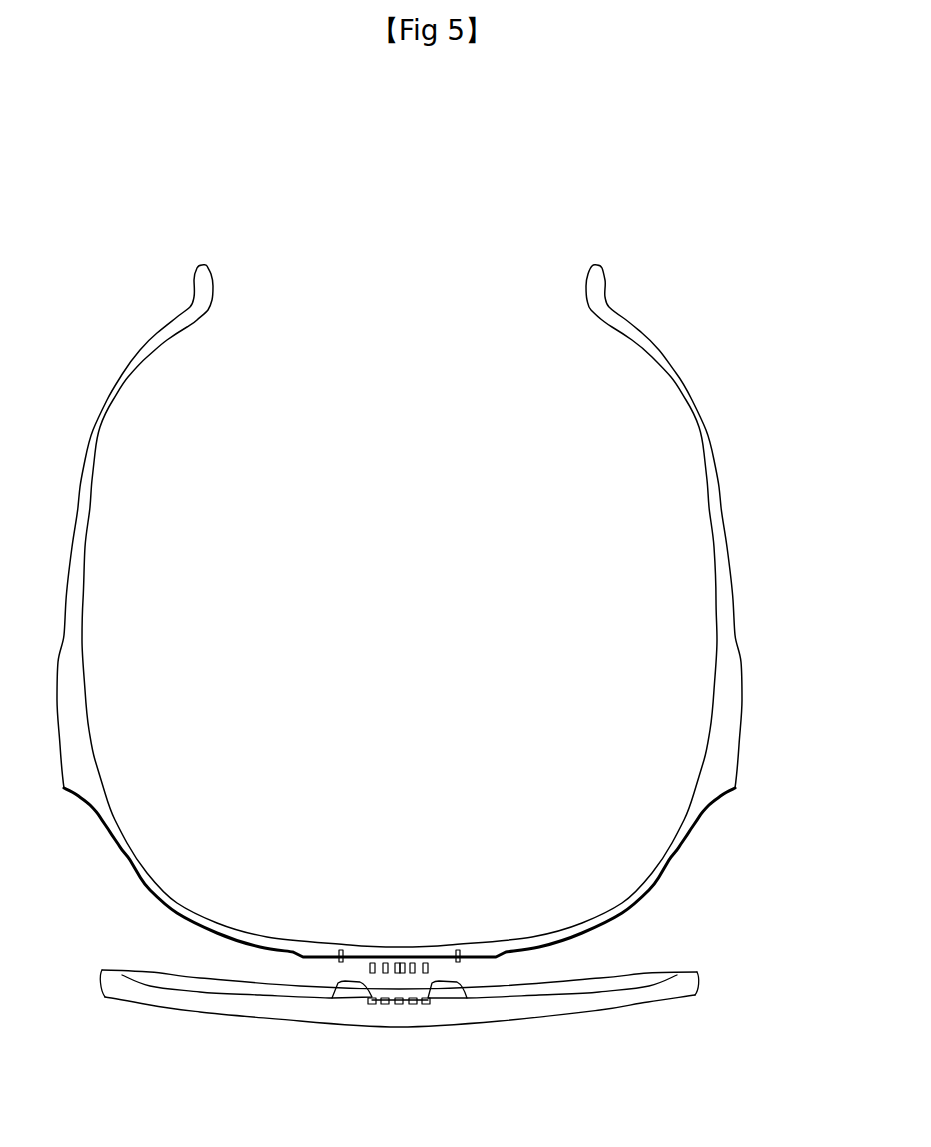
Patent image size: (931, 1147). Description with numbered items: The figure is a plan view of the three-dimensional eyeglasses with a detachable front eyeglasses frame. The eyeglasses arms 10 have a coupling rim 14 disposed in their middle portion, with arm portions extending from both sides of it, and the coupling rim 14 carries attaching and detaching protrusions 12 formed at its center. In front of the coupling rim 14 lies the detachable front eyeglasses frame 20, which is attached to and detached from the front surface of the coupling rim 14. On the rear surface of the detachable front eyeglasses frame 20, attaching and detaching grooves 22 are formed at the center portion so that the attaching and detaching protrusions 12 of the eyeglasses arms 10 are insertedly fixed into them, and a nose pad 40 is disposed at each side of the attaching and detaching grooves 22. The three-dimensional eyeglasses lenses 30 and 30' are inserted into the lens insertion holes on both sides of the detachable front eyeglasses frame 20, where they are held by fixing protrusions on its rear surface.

The eyeglasses arms 10 is at (727, 755).
The attaching and detaching protrusions 12 is at (387, 973).
The coupling rim 14 is at (652, 877).
The detachable front eyeglasses frame 20 is at (687, 988).
The attaching and detaching grooves 22 is at (400, 978).
The 3D eyeglasses lens 30 is at (598, 957).
The 3D eyeglasses lens 30' is at (209, 950).
The nose pad 40 is at (358, 987).